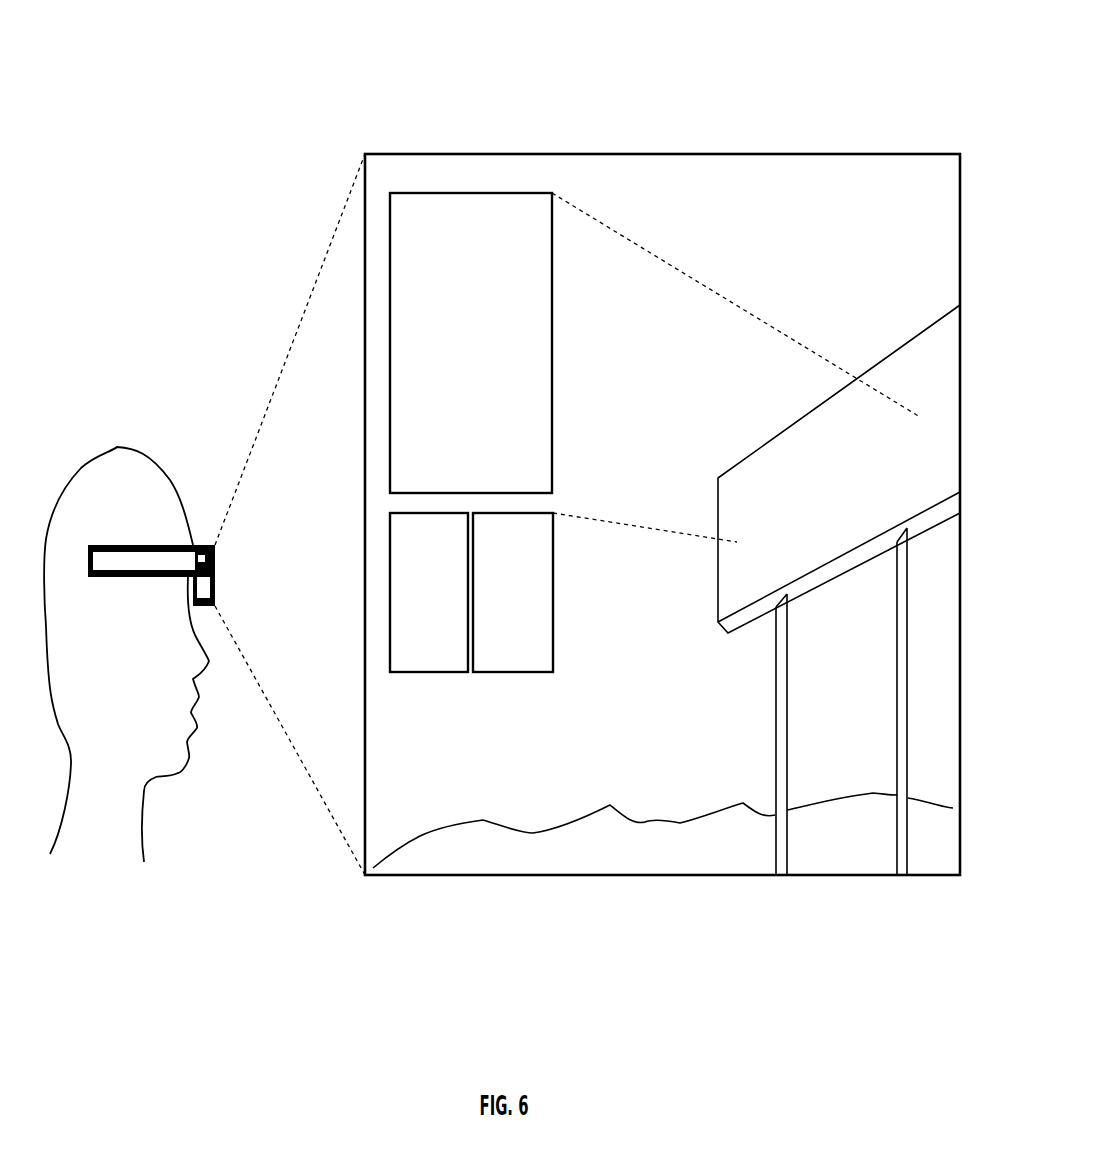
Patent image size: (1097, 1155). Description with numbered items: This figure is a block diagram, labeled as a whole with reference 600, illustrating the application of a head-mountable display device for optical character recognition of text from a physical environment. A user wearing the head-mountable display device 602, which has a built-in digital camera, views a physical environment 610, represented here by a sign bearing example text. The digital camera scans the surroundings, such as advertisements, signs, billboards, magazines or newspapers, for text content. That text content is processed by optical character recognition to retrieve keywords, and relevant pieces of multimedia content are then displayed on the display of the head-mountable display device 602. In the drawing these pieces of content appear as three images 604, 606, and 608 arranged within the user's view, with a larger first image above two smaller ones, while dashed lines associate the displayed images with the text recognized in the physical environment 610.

The example augmented reality scene 600 is at (810, 80).
The head-mountable display device 602 is at (196, 488).
The image 604 is at (455, 415).
The image 606 is at (414, 647).
The image 608 is at (497, 647).
The physical environment 610 is at (741, 452).